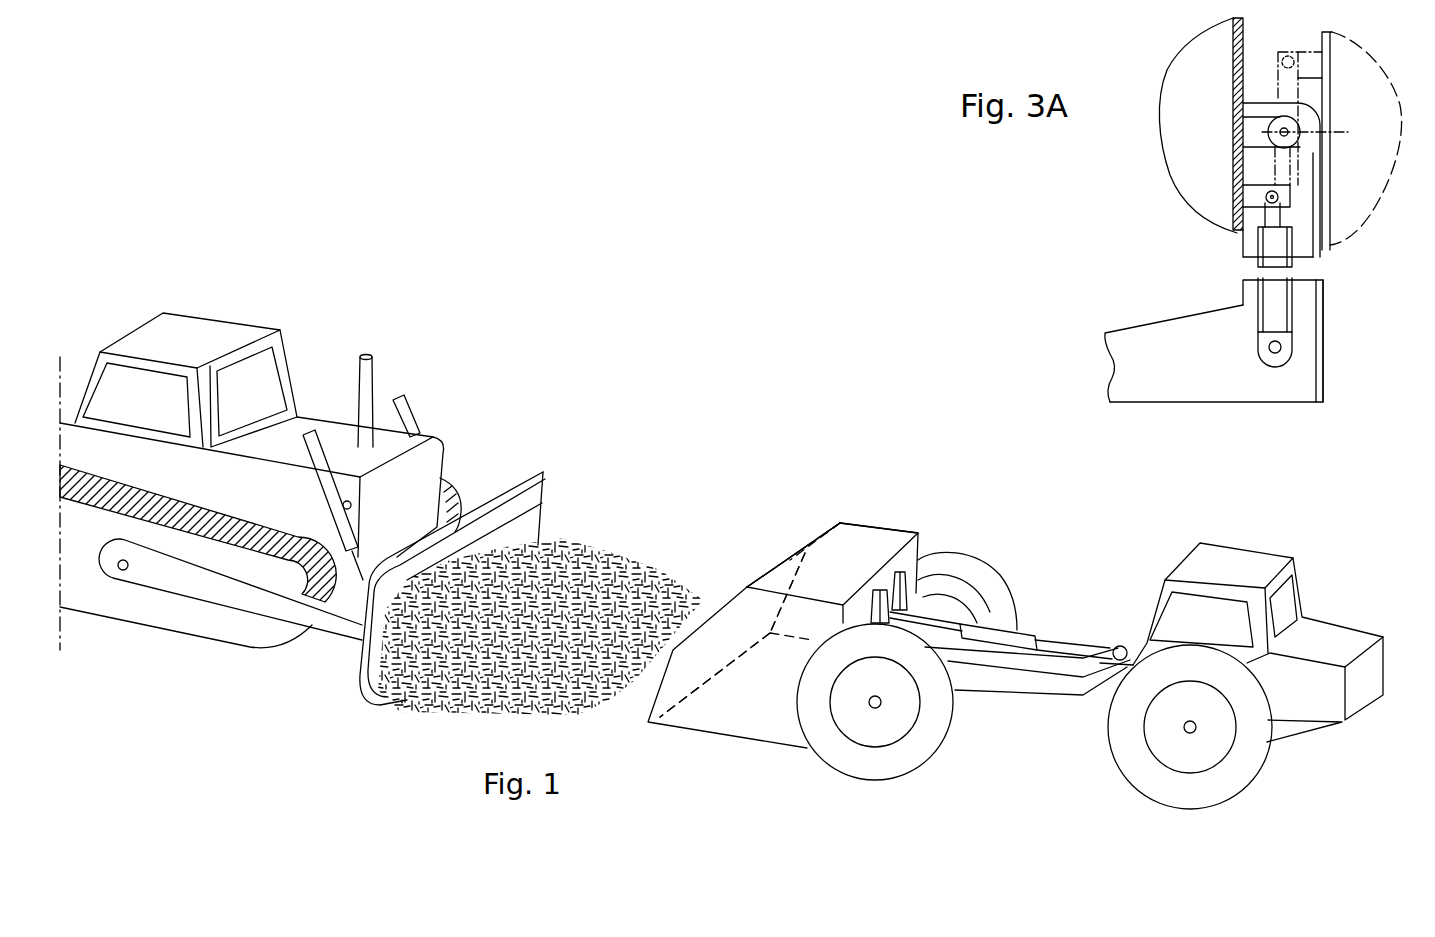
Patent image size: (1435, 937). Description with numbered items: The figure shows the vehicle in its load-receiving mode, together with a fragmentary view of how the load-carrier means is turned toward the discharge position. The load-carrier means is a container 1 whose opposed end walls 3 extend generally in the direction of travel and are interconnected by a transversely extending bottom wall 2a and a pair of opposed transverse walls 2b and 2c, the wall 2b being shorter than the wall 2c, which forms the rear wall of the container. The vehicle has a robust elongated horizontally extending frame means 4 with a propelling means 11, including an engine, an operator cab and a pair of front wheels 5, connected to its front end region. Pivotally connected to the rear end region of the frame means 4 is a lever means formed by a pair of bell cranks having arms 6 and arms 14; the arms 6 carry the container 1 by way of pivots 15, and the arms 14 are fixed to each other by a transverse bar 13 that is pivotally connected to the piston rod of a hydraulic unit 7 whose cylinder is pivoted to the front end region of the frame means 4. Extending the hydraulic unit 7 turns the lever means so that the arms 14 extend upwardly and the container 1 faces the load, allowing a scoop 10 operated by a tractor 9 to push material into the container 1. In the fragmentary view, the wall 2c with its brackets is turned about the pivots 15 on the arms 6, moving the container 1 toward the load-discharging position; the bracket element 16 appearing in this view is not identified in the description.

In FIG. 1, the container 1 is at (848, 577).
In FIG. 1, the bottom wall 2a is at (915, 553).
In FIG. 1, the transverse wall 2b is at (840, 522).
In FIG. 1, the rear wall 2c is at (748, 680).
In FIG. 3A, the rear wall 2c is at (1233, 52).
In FIG. 1, the end walls 3 is at (866, 548).
In FIG. 1, the frame means 4 is at (1038, 690).
In FIG. 1, the front wheels 5 is at (1200, 800).
In FIG. 3A, the arms 6 is at (1323, 348).
In FIG. 1, the hydraulic unit 7 is at (1036, 637).
In FIG. 1, the tractor 9 is at (203, 327).
In FIG. 1, the scoop 10 is at (530, 492).
In FIG. 1, the propelling means 11 is at (1228, 557).
In FIG. 1, the transverse bar 13 is at (890, 619).
In FIG. 1, the arms 14 is at (896, 596).
In FIG. 3A, the arms 14 is at (1167, 340).
In FIG. 3A, the pivots 15 is at (1300, 132).
In FIG. 3A, the pivot bracket 16 is at (1255, 200).